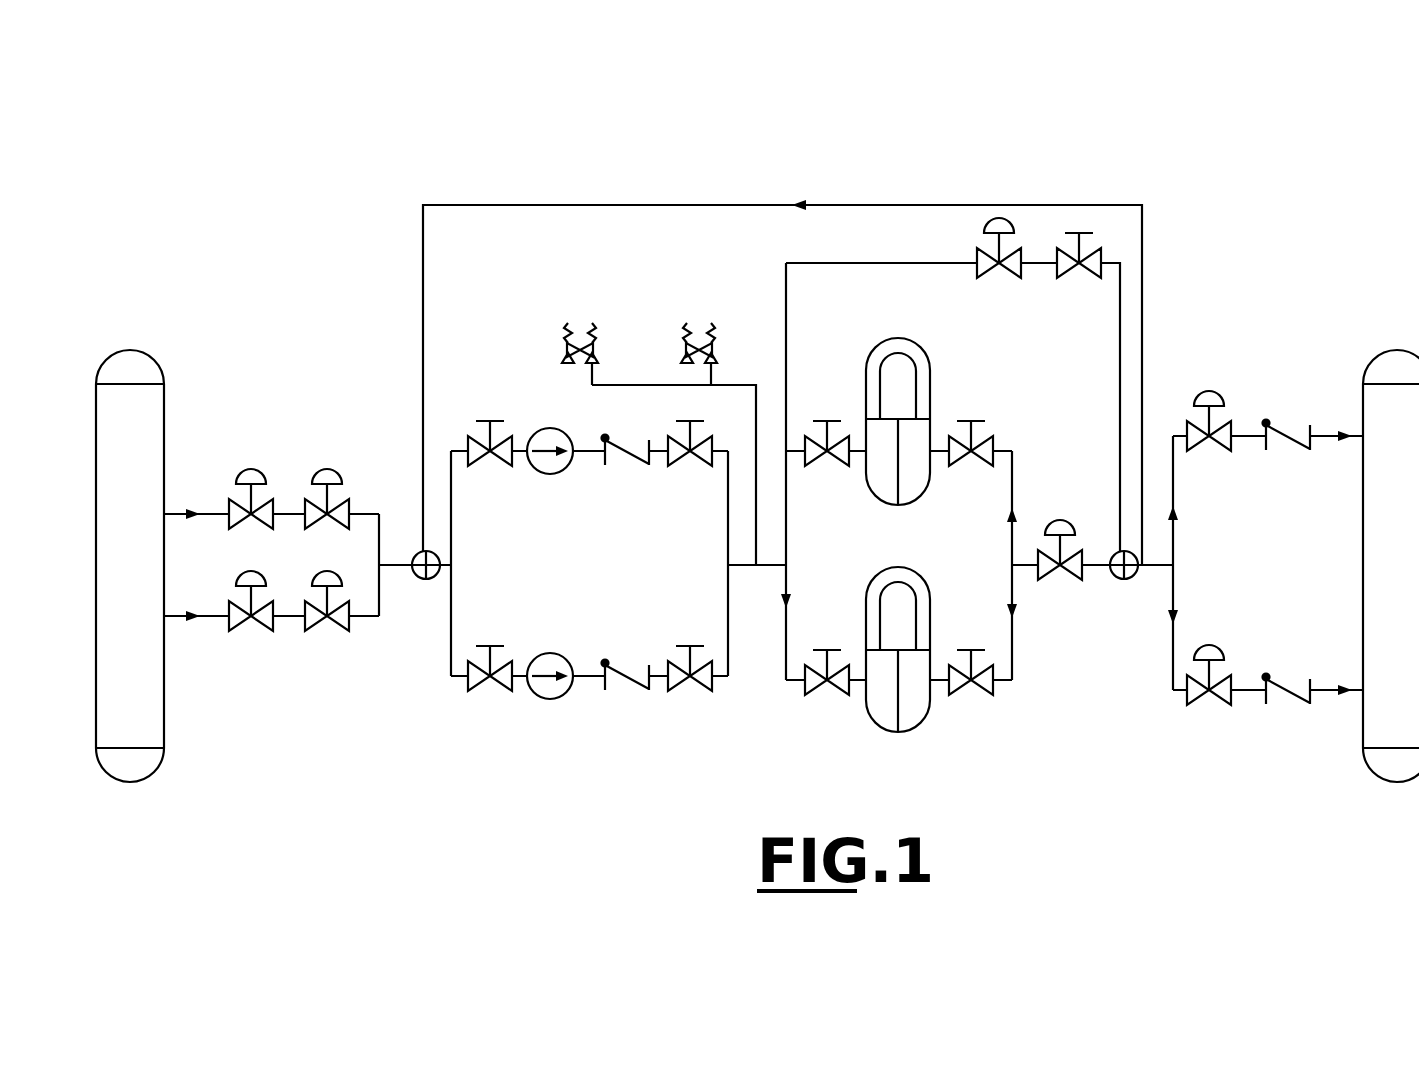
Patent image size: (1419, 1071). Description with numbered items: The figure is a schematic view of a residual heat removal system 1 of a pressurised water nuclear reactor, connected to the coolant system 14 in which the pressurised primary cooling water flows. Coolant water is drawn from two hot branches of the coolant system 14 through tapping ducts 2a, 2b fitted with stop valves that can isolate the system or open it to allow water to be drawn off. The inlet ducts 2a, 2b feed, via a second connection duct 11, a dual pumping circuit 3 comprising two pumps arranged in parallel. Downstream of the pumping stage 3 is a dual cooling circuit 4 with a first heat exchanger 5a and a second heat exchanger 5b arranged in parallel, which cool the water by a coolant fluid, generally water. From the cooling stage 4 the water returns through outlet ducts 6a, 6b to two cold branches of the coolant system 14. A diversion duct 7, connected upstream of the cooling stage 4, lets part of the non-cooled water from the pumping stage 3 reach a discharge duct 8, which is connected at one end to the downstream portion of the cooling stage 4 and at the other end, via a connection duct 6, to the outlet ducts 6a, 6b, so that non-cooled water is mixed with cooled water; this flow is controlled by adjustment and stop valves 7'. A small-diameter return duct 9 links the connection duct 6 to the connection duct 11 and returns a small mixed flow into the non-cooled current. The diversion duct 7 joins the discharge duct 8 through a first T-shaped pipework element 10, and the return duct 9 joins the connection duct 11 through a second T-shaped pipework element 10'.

The residual heat removal system 1 is at (757, 445).
The tapping duct 2a is at (287, 456).
The tapping duct 2b is at (296, 645).
The dual pumping circuit 3 is at (594, 708).
The dual cooling circuit 4 is at (905, 520).
The first heat exchanger 5a is at (909, 481).
The second heat exchanger 5b is at (911, 708).
The connection duct 6 is at (1176, 574).
The outlet duct 6a is at (1246, 400).
The outlet duct 6b is at (1255, 729).
The diversion duct 7 is at (953, 384).
The adjustment and stop valves 7' is at (1039, 268).
The discharge duct 8 is at (1096, 571).
The return duct 9 is at (540, 205).
The first T-shaped pipework element 10 is at (1167, 580).
The second T-shaped pipework element 10' is at (417, 607).
The second connection duct 11 is at (396, 560).
The coolant system 14 is at (146, 573).